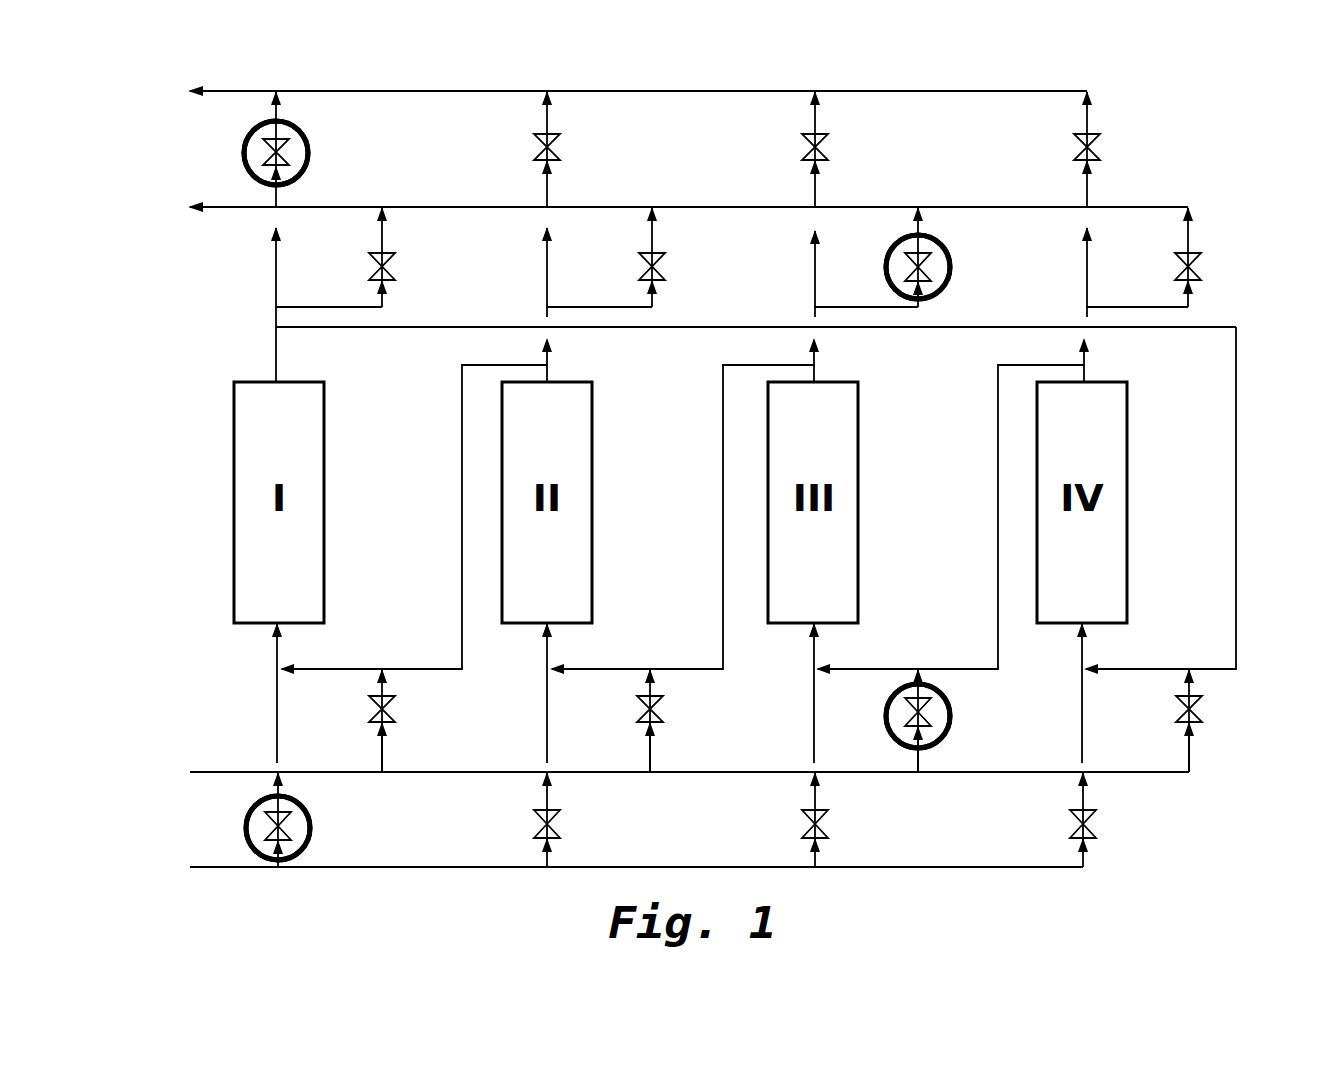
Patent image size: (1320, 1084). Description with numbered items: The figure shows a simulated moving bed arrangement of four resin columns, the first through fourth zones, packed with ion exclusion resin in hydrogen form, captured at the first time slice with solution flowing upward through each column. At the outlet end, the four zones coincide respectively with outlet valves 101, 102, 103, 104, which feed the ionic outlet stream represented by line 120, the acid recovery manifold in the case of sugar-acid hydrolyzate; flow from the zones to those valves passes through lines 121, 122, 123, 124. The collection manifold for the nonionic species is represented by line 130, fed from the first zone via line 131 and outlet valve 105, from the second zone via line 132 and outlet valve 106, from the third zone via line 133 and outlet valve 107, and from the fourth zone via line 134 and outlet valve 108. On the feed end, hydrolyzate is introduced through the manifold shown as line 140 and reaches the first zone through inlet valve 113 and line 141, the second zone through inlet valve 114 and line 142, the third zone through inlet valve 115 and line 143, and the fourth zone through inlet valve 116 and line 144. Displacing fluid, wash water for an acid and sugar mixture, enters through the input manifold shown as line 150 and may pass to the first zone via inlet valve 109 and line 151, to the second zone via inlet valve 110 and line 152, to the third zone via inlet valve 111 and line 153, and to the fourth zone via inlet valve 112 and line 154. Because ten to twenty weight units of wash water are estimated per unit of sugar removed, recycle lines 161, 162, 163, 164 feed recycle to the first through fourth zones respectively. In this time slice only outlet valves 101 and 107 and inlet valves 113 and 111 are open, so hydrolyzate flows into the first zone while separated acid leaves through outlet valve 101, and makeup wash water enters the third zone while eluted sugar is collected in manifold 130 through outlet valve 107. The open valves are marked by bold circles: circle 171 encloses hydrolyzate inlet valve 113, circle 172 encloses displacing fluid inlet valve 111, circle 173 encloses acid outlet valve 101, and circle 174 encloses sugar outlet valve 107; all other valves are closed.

The outlet valve 101 is at (296, 149).
The outlet valve 102 is at (577, 149).
The outlet valve 103 is at (844, 149).
The outlet valve 104 is at (1118, 149).
The outlet valve 105 is at (410, 257).
The outlet valve 106 is at (681, 257).
The outlet valve 107 is at (937, 257).
The outlet valve 108 is at (1216, 257).
The inlet valve 109 is at (412, 720).
The inlet valve 110 is at (681, 720).
The inlet valve 111 is at (935, 720).
The inlet valve 112 is at (1219, 720).
The inlet valve 113 is at (296, 819).
The inlet valve 114 is at (575, 819).
The inlet valve 115 is at (845, 819).
The inlet valve 116 is at (1114, 819).
The line 120 is at (637, 116).
The line 121 is at (248, 304).
The line 122 is at (518, 272).
The line 123 is at (787, 273).
The line 124 is at (1057, 272).
The line 130 is at (688, 184).
The line 131 is at (329, 284).
The line 132 is at (599, 280).
The line 133 is at (866, 281).
The line 134 is at (1137, 282).
The line 140 is at (636, 842).
The line 141 is at (251, 693).
The line 142 is at (519, 693).
The line 143 is at (783, 693).
The line 144 is at (1053, 693).
The line 150 is at (689, 746).
The line 151 is at (347, 754).
The line 152 is at (617, 754).
The line 153 is at (884, 756).
The line 154 is at (1155, 754).
The recycle line 161 is at (413, 519).
The recycle line 162 is at (682, 519).
The recycle line 163 is at (950, 519).
The recycle line 164 is at (1160, 500).
The circle 171 is at (311, 828).
The circle 172 is at (952, 716).
The circle 173 is at (308, 153).
The circle 174 is at (951, 267).